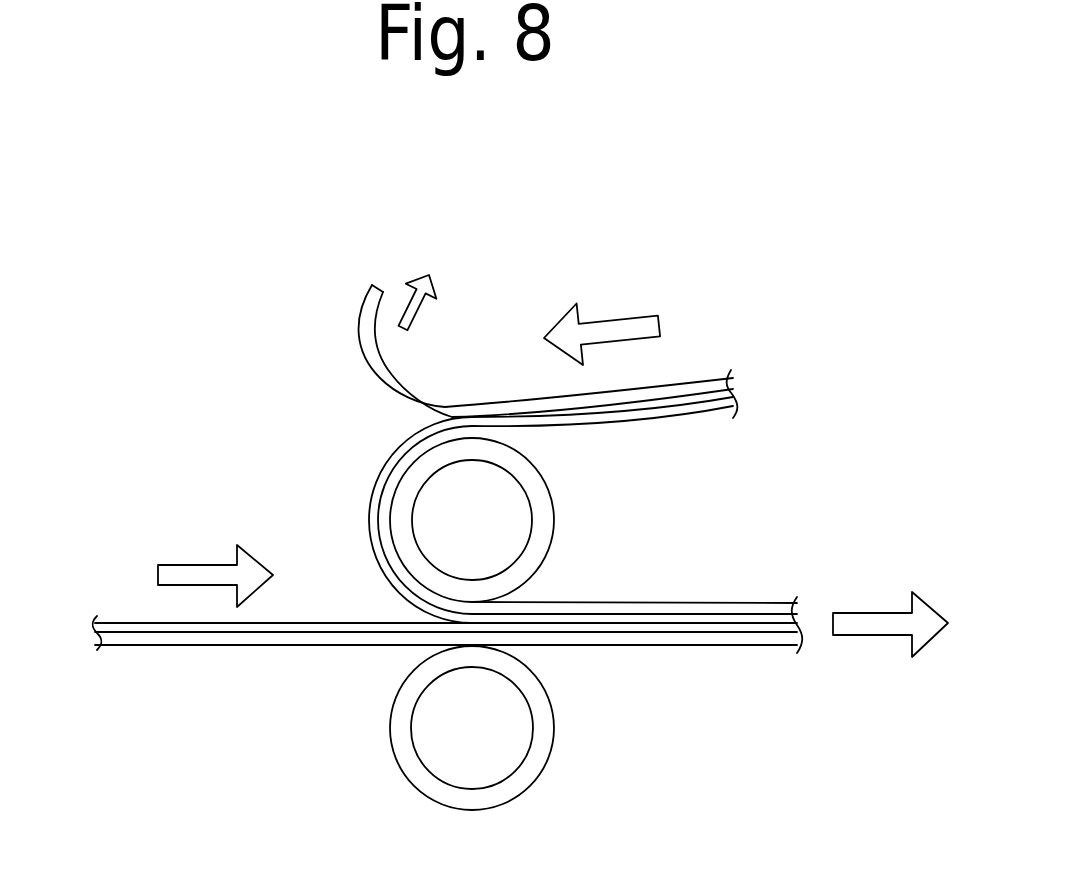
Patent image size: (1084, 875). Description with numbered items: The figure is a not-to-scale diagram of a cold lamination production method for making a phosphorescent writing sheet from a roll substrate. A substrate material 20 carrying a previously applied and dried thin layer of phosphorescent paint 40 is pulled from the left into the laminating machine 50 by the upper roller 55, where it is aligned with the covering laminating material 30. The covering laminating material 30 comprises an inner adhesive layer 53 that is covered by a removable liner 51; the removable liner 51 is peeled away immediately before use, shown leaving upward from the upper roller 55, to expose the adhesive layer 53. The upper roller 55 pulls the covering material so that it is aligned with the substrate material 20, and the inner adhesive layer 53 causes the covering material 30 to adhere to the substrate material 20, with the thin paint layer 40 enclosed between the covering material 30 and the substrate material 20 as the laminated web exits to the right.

The substrate material 20 is at (120, 640).
The covering laminating material 30 is at (690, 413).
The layer of phosphorescent paint 40 is at (120, 627).
The laminating machine 50 is at (335, 700).
The removable liner 51 is at (667, 387).
The inner adhesive layer 53 is at (702, 396).
The upper roller 55 is at (450, 525).